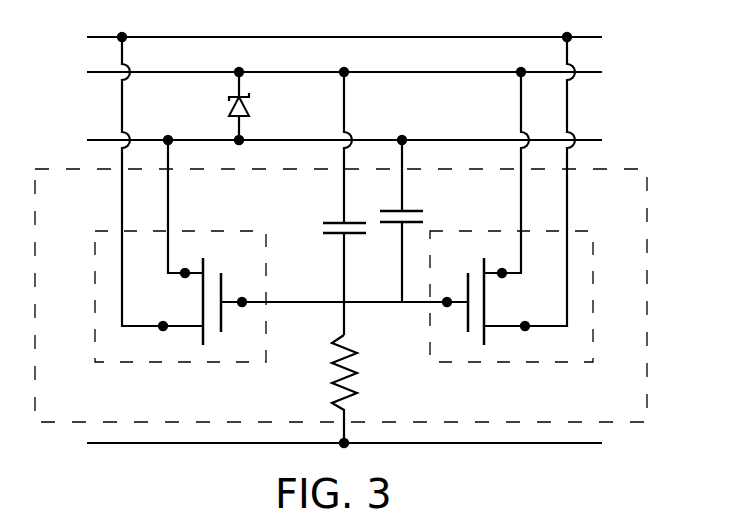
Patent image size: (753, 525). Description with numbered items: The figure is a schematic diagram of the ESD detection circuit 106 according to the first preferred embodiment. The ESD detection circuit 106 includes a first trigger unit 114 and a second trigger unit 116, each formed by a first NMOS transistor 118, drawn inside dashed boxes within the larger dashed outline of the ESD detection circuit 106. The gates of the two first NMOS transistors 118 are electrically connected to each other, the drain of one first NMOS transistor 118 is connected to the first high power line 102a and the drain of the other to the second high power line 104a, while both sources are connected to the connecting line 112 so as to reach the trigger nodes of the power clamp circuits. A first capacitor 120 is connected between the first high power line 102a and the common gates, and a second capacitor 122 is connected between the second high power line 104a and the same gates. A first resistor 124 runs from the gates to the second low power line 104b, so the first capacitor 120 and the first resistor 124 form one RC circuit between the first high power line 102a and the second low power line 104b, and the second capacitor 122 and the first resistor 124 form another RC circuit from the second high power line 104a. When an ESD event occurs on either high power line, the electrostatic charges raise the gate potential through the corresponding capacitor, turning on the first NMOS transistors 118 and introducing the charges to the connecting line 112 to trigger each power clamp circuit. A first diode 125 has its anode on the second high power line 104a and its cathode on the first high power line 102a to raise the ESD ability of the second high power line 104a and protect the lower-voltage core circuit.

The connecting line 112 is at (586, 37).
The first high power line 102a is at (582, 72).
The second high power line 104a is at (582, 140).
The second low power line 104b is at (583, 443).
The ESD detection circuit 106 is at (647, 175).
The first trigger unit 114 is at (595, 298).
The second trigger unit 116 is at (107, 230).
The first NMOS transistor 118 is at (212, 267).
The first capacitor 120 is at (323, 230).
The second capacitor 122 is at (422, 219).
The first resistor 124 is at (332, 373).
The first diode 125 is at (252, 102).